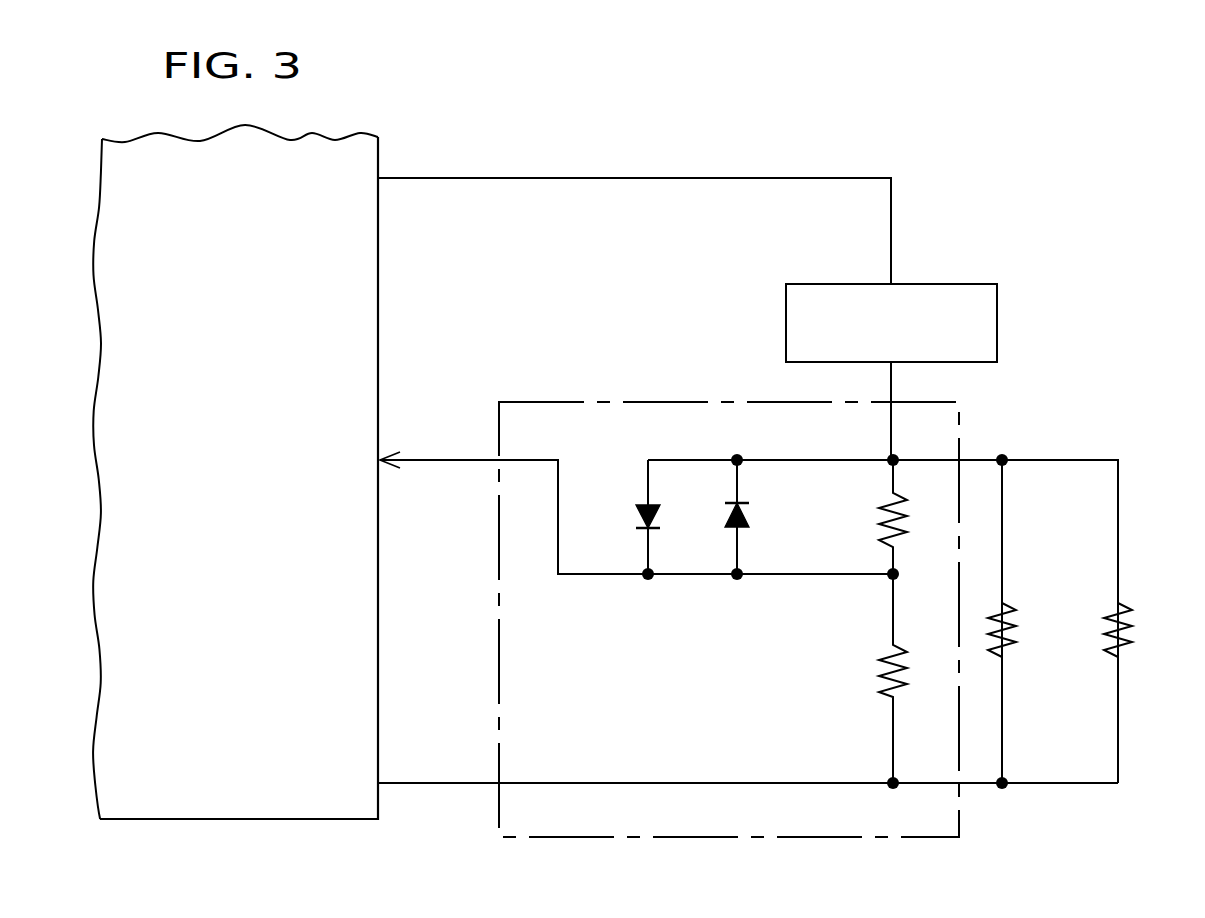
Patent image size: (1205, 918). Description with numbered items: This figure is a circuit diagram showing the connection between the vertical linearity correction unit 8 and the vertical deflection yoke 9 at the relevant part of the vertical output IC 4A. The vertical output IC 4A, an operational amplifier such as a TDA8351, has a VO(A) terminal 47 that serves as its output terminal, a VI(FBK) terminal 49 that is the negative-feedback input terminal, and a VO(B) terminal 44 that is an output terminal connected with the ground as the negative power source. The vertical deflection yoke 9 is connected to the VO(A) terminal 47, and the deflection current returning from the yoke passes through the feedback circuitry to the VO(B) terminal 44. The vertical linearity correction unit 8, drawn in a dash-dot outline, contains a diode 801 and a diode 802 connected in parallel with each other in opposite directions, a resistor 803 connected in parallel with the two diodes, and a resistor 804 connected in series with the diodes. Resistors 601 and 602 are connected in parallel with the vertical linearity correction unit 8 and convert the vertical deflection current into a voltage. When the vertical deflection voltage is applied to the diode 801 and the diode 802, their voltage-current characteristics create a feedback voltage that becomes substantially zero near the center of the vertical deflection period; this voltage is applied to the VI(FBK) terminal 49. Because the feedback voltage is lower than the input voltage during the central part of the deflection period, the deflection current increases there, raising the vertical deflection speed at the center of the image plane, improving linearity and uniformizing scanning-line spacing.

The vertical output IC 4A is at (247, 820).
The VO(A) terminal 47 is at (533, 224).
The VI(FBK) terminal 49 is at (505, 510).
The VO(B) terminal 44 is at (656, 781).
The vertical deflection yoke 9 is at (997, 332).
The vertical linearity correction unit 8 is at (737, 838).
The diode 801 is at (641, 512).
The diode 802 is at (743, 530).
The resistor 803 is at (887, 527).
The resistor 804 is at (878, 673).
The resistor 601 is at (1008, 612).
The resistor 602 is at (1126, 612).